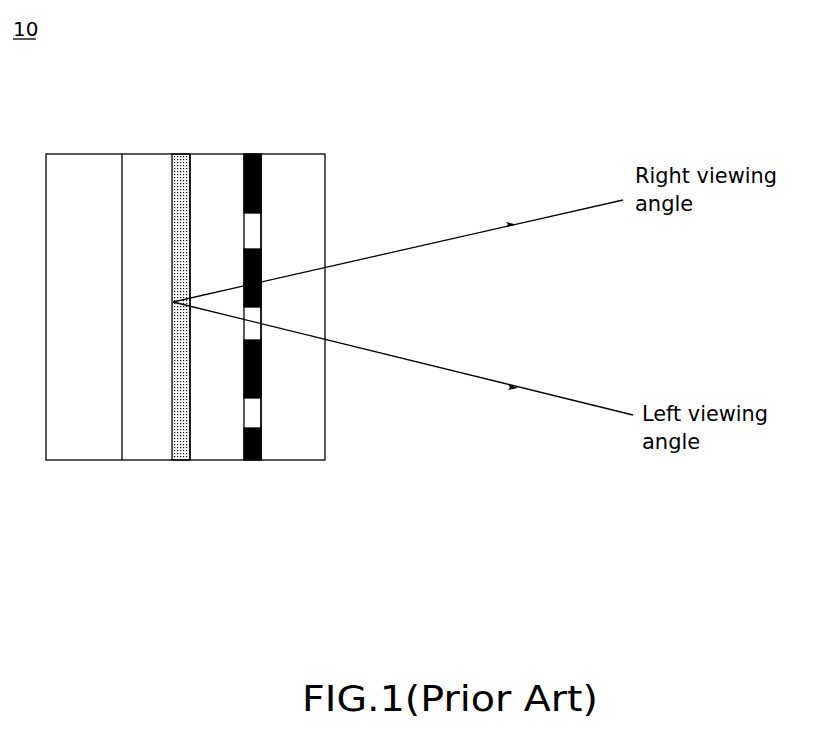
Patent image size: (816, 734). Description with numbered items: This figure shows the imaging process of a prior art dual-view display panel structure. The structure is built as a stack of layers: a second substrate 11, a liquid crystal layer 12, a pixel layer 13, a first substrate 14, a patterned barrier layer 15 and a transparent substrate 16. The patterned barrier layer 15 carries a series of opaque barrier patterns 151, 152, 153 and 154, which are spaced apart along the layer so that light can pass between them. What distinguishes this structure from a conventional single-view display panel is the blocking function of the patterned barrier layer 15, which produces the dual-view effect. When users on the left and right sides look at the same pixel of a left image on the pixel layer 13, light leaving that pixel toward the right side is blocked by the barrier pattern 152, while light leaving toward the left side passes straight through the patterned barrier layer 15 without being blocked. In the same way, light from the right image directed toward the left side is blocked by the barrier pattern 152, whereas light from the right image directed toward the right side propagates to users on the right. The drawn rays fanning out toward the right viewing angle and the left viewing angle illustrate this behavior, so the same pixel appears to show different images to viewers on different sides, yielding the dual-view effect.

The second substrate 11 is at (88, 154).
The liquid crystal layer 12 is at (147, 154).
The pixel layer 13 is at (185, 154).
The first substrate 14 is at (215, 460).
The patterned barrier layer 15 is at (328, 339).
The opaque barrier pattern 151 is at (262, 190).
The opaque barrier pattern 152 is at (262, 265).
The opaque barrier pattern 153 is at (262, 373).
The opaque barrier pattern 154 is at (262, 447).
The transparent substrate 16 is at (297, 460).